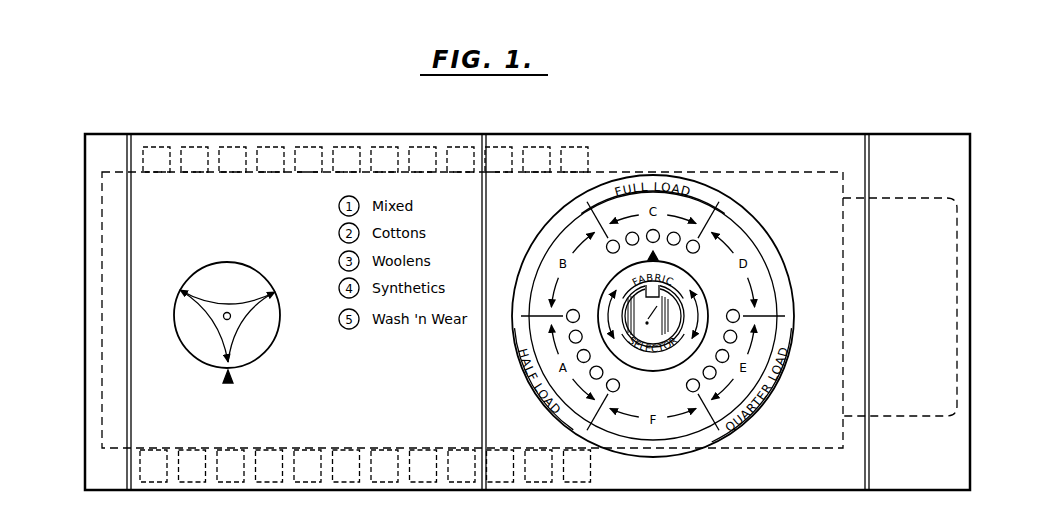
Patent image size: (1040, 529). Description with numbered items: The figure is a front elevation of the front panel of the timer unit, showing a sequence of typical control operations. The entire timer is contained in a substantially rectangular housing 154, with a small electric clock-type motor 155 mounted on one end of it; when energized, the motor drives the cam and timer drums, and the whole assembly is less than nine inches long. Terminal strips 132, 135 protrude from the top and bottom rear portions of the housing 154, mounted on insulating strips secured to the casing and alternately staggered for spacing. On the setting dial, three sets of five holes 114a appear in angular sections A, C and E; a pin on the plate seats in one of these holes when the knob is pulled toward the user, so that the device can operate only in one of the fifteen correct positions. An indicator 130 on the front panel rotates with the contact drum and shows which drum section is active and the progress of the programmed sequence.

The holes 114a is at (607, 254).
The indicator 130 is at (262, 296).
The terminal strip 132 is at (201, 483).
The terminal strip 135 is at (190, 147).
The housing 154 is at (101, 184).
The electric clock-type motor 155 is at (955, 250).